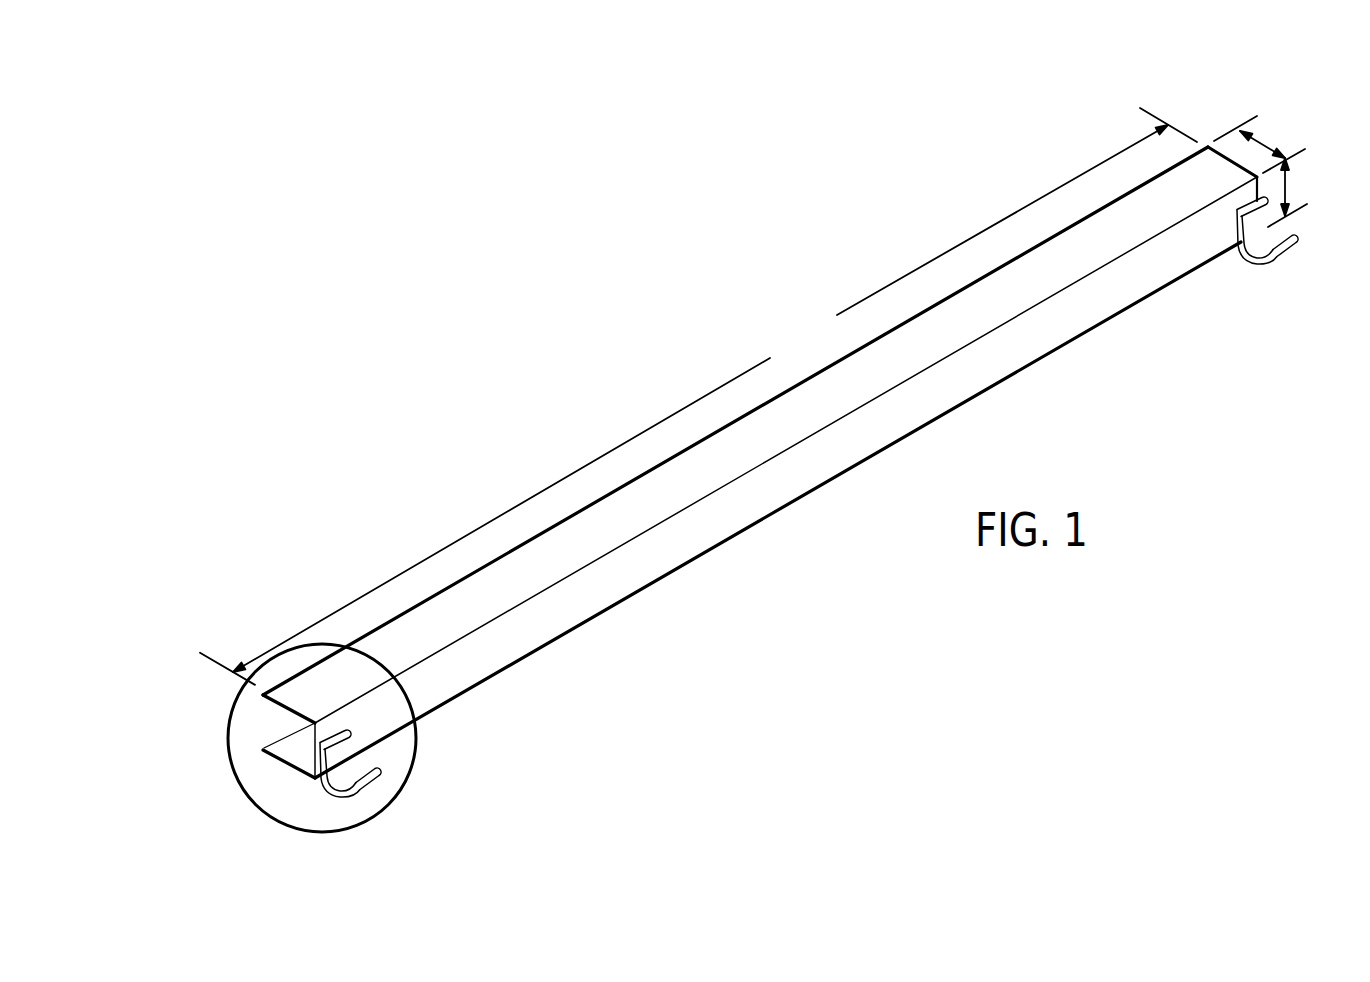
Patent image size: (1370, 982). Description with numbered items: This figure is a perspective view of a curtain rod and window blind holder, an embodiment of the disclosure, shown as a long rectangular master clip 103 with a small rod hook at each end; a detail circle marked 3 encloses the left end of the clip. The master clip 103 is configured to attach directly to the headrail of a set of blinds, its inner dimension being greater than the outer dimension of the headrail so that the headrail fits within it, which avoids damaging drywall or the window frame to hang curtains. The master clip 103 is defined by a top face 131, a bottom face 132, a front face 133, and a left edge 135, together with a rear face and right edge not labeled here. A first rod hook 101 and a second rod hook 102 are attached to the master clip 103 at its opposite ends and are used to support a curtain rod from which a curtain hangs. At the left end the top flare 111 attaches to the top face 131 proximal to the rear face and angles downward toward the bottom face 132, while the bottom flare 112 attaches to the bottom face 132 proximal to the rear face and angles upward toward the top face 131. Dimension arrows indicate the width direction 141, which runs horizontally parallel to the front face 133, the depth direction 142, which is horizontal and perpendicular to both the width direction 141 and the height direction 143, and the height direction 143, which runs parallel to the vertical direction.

The detail region shown in FIG. 3 is at (290, 648).
The first rod hook 101 is at (368, 785).
The second rod hook 102 is at (1295, 250).
The master clip 103 is at (1168, 287).
The top flare 111 is at (240, 700).
The bottom flare 112 is at (263, 743).
The top face 131 is at (615, 512).
The bottom face 132 is at (298, 763).
The front face 133 is at (628, 585).
The left edge 135 is at (287, 760).
The width direction 141 is at (698, 396).
The depth direction 142 is at (1240, 130).
The height direction 143 is at (1290, 190).